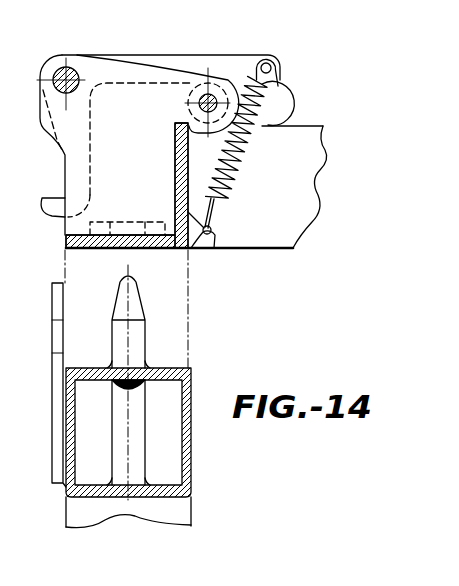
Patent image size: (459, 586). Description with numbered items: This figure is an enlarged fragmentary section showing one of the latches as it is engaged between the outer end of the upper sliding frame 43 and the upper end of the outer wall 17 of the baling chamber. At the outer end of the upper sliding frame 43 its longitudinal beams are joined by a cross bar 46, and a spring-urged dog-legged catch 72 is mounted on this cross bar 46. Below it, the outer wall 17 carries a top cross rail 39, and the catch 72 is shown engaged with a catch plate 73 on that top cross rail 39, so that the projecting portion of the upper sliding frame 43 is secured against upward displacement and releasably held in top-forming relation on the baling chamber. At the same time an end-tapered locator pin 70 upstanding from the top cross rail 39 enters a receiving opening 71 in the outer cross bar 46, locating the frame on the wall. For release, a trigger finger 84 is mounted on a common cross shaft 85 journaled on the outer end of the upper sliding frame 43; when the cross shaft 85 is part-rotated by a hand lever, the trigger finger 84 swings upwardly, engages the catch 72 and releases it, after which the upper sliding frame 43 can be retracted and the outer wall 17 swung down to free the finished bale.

The dog-legged catch 72 is at (103, 49).
The cross shaft 85 is at (213, 93).
The trigger finger 84 is at (278, 99).
The cross bar 46 is at (175, 160).
The upper sliding frame 43 is at (289, 176).
The receiving opening 71 is at (146, 224).
The catch plate 73 is at (57, 297).
The locator pin 70 is at (140, 338).
The top cross rail 39 is at (191, 393).
The outer wall 17 is at (68, 510).